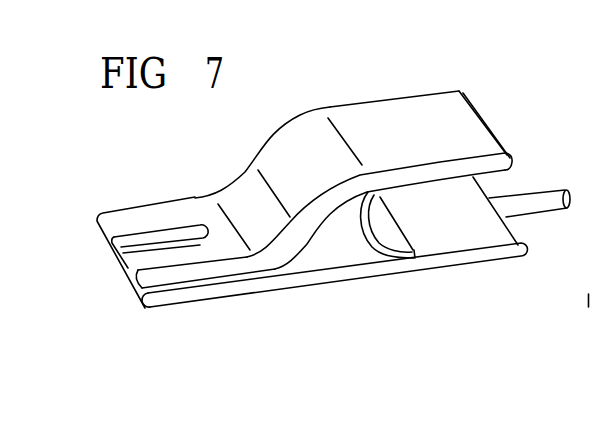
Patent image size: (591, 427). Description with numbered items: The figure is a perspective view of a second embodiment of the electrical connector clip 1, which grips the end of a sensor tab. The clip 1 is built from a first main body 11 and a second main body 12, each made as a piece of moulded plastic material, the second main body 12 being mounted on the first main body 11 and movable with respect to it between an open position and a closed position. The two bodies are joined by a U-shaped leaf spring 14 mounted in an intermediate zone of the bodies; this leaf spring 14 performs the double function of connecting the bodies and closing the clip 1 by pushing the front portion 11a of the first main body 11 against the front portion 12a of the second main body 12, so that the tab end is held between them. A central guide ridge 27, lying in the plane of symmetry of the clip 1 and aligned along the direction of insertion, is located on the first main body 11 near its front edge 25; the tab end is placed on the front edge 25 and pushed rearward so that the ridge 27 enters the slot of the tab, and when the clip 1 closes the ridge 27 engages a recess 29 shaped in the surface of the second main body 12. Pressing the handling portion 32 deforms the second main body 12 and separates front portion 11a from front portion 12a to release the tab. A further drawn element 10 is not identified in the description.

The electrical connector clip 1 is at (383, 70).
The pin 10 is at (531, 206).
The first main body 11 is at (272, 298).
The front portion of the first main body 11a is at (163, 303).
The second main body 12 is at (306, 161).
The front portion of the second main body 12a is at (100, 213).
The leaf spring 14 is at (388, 231).
The front edge 25 is at (96, 257).
The central guide ridge 27 is at (157, 236).
The recess 29 is at (169, 234).
The handling portion 32 is at (410, 133).